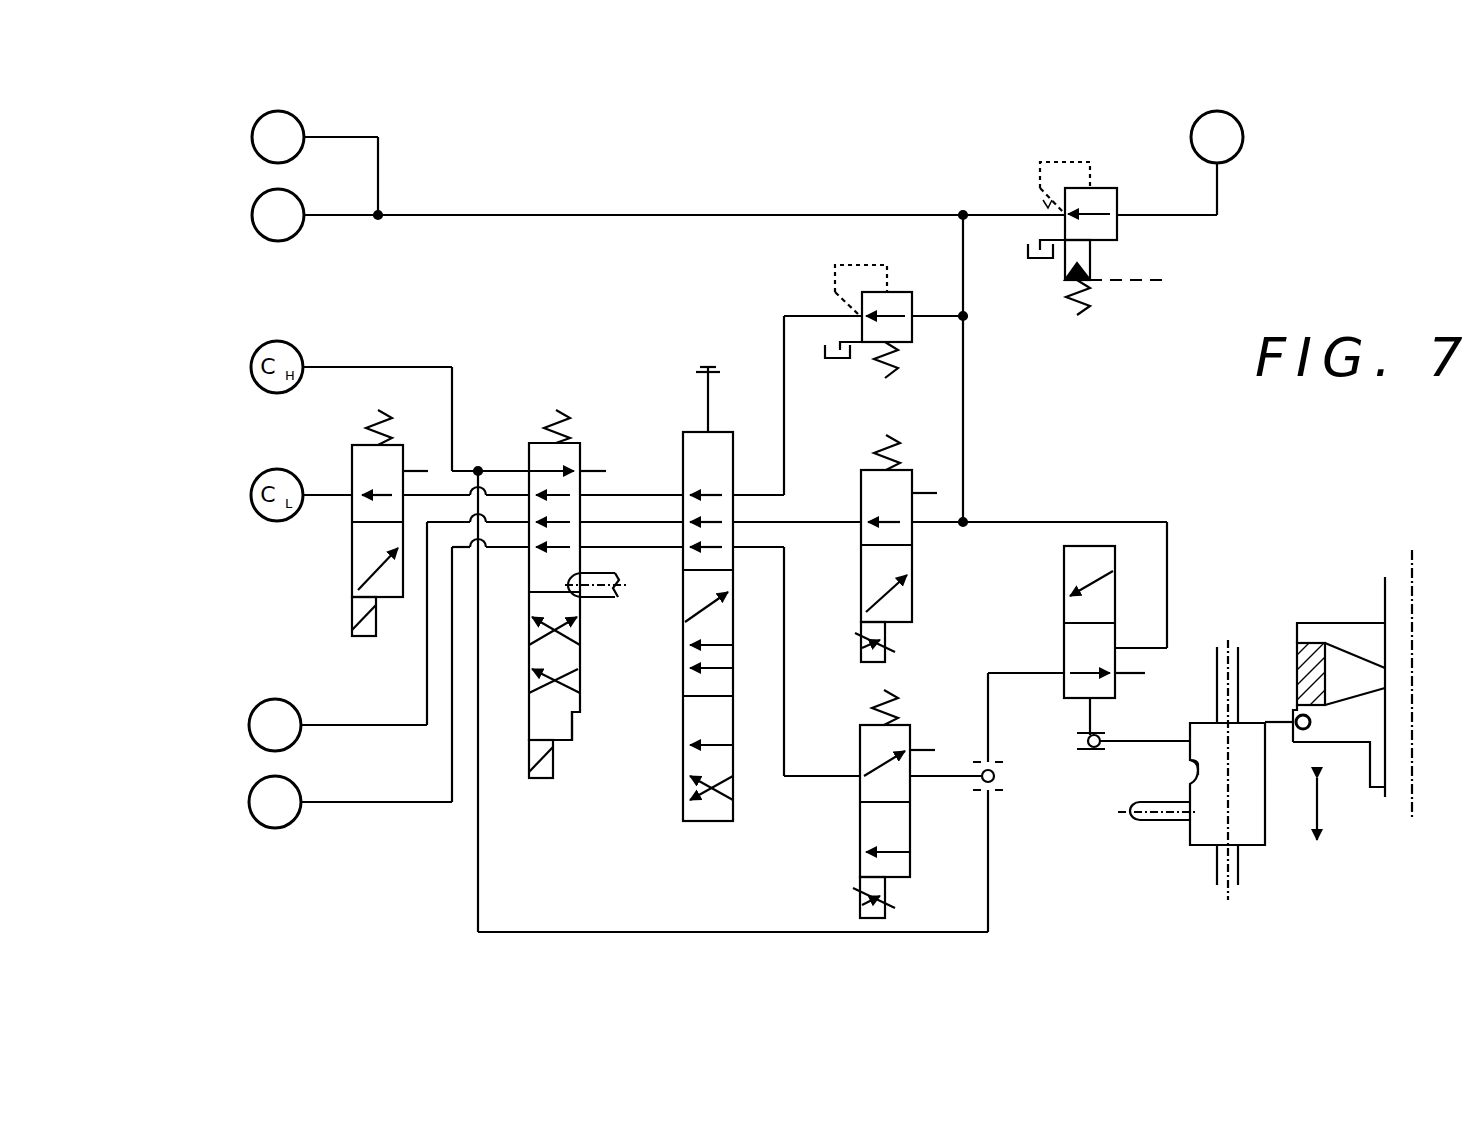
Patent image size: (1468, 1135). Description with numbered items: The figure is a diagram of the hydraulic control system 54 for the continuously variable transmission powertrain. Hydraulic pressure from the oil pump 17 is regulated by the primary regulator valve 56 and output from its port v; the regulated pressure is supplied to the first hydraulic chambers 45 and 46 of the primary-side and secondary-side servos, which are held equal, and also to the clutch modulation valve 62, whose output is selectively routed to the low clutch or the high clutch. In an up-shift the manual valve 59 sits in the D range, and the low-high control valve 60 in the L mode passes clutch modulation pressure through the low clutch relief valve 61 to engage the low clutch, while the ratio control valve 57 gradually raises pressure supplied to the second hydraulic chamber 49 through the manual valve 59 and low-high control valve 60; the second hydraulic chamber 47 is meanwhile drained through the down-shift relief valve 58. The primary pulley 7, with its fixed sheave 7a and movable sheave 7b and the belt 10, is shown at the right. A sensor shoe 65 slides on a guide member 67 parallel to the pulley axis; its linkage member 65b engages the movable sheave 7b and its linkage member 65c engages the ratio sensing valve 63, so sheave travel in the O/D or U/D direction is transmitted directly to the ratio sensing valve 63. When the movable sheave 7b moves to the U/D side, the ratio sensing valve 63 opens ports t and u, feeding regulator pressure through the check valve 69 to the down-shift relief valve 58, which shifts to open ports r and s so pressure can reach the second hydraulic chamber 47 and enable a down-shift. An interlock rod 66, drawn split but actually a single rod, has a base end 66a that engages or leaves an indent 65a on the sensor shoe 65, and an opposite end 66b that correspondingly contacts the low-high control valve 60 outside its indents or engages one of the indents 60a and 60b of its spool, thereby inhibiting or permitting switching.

The primary pulley 7 is at (1332, 698).
The fixed sheave of primary pulley 7a is at (1360, 625).
The movable sheave 7b is at (1350, 745).
The belt 10 is at (1293, 652).
The oil pump 17 is at (1245, 135).
The first hydraulic chamber 45 is at (250, 135).
The first hydraulic chamber 46 is at (250, 214).
The second hydraulic chamber 47 is at (248, 801).
The second hydraulic chamber 49 is at (248, 723).
The hydraulic control system 54 is at (786, 180).
The primary regulator valve 56 is at (1095, 188).
The ratio control valve 57 is at (898, 470).
The down-shift relief valve 58 is at (898, 725).
The manual valve 59 is at (711, 432).
The low-high control valve 60 is at (575, 604).
The indent 60a is at (580, 592).
The indent 60b is at (578, 742).
The low clutch relief valve 61 is at (388, 445).
The clutch modulation valve 62 is at (895, 292).
The ratio sensing valve 63 is at (1062, 575).
The sensor shoe 65 is at (1196, 795).
The indent 65a is at (1193, 765).
The linkage member 65b is at (1275, 718).
The linkage member 65c is at (1170, 740).
The interlock rod 66 is at (1150, 868).
The base end 66a is at (1187, 825).
The opposite end 66b is at (618, 598).
The guide member 67 is at (1217, 668).
The check valve 69 is at (995, 795).